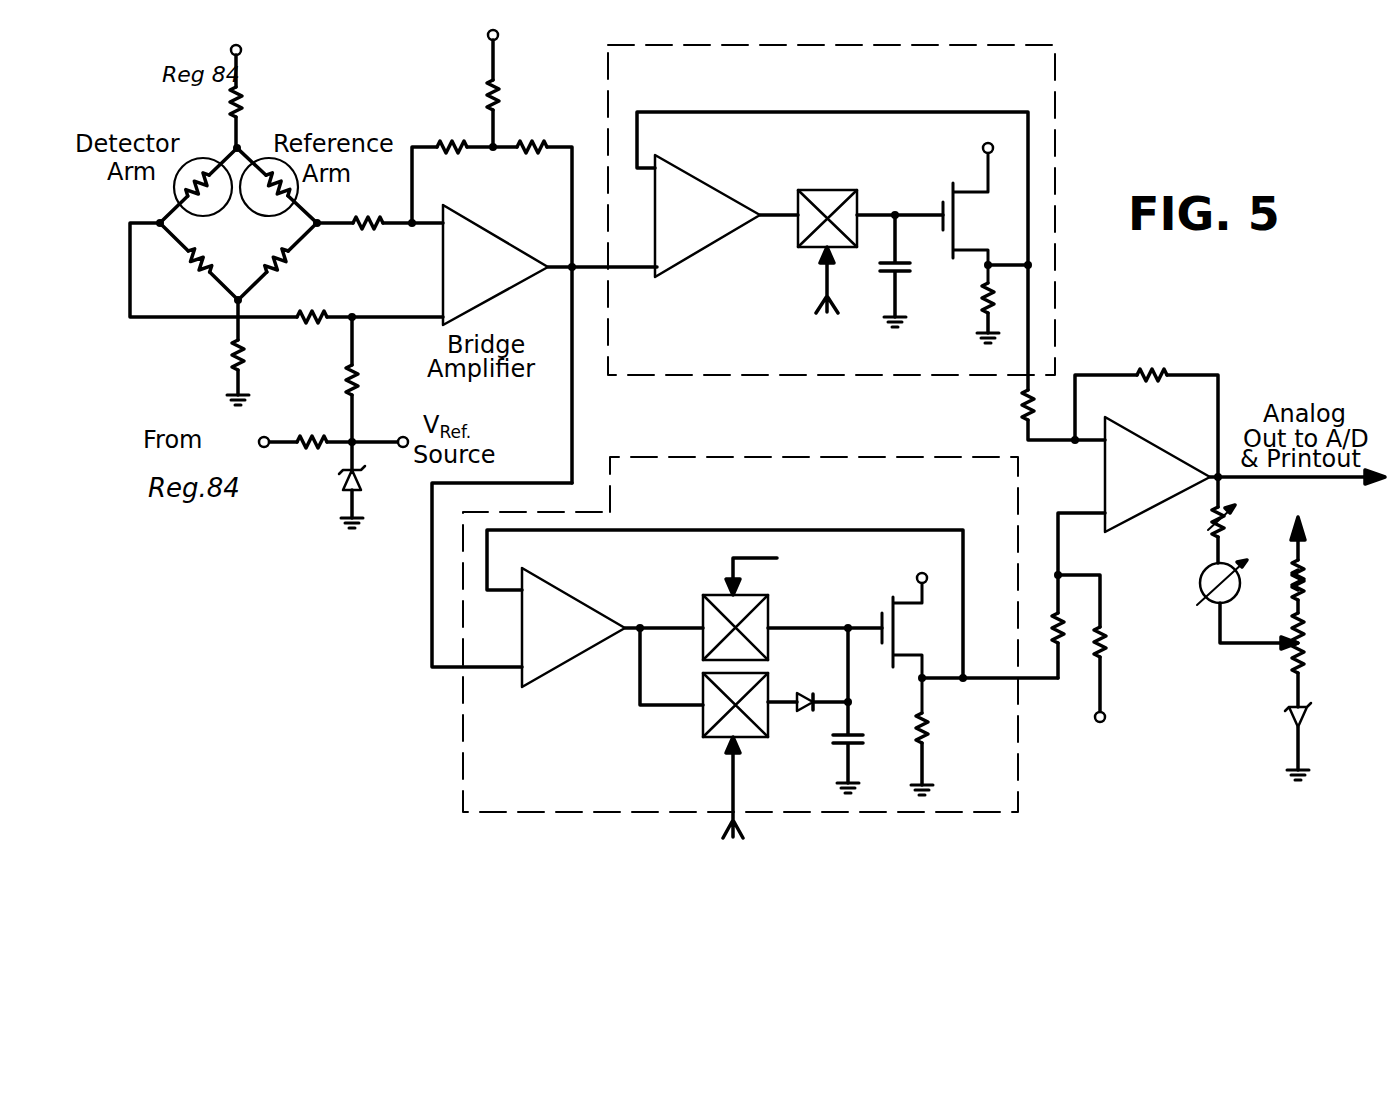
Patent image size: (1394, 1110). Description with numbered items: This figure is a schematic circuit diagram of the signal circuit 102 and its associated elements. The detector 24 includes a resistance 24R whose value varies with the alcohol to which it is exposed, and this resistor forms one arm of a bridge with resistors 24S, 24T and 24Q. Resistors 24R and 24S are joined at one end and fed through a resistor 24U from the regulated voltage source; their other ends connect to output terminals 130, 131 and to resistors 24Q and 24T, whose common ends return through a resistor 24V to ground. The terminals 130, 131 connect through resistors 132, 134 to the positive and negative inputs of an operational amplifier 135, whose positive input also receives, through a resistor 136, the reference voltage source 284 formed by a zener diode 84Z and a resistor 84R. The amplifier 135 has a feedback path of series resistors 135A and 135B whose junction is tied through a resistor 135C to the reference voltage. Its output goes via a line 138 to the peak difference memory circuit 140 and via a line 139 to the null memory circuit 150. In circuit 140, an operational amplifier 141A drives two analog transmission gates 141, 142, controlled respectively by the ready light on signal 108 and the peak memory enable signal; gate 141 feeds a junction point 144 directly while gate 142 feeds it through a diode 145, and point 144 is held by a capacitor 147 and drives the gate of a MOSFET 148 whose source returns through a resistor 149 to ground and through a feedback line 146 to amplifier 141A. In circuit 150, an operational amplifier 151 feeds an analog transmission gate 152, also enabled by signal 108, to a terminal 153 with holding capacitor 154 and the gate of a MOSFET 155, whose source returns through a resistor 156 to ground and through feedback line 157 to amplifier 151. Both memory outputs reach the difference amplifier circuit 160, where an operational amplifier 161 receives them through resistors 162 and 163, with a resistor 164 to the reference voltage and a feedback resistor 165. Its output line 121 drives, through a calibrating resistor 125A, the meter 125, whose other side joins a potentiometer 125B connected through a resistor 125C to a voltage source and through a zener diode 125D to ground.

The detector 24 is at (209, 225).
The resistor 24U is at (242, 97).
The resistance 24R is at (219, 212).
The resistor 24S is at (295, 192).
The resistor 24Q is at (196, 262).
The resistor 24T is at (292, 268).
The resistor 24V is at (262, 352).
The output terminal 130 is at (150, 222).
The output terminal 131 is at (335, 243).
The resistor 132 is at (312, 316).
The resistor 134 is at (370, 228).
The operational amplifier 135 is at (550, 266).
The resistor 135A is at (533, 140).
The resistor 135B is at (452, 140).
The resistor 135C is at (500, 100).
The resistor 136 is at (356, 375).
The resistor 84R is at (316, 439).
The zener diode 84Z is at (362, 478).
The reference voltage source 284 is at (322, 461).
The signal circuit 102 is at (400, 633).
The line 138 is at (575, 377).
The line 139 is at (628, 270).
The null memory circuit 150 is at (831, 210).
The operational amplifier 151 is at (726, 217).
The analog transmission gate 152 is at (826, 188).
The terminal 153 is at (894, 212).
The holding capacitor 154 is at (903, 268).
The MOSFET 155 is at (956, 227).
The resistor 156 is at (982, 312).
The feedback line 157 is at (797, 112).
The ready light on signal 108 is at (824, 286).
The peak difference memory circuit 140 is at (808, 457).
The operational amplifier 141A is at (612, 636).
The analog transmission gate 141 is at (704, 642).
The analog transmission gate 142 is at (702, 697).
The junction point 144 is at (846, 632).
The diode 145 is at (810, 711).
The feedback line 146 is at (763, 530).
The holding capacitor 147 is at (853, 743).
The MOSFET 148 is at (897, 647).
The resistor 149 is at (928, 740).
The difference amplifier circuit 160 is at (1322, 349).
The operational amplifier 161 is at (1245, 474).
The resistor 162 is at (1060, 645).
The resistor 163 is at (1024, 412).
The resistor 164 is at (1104, 640).
The feedback resistor 165 is at (1150, 377).
The line 121 is at (1222, 481).
The meter 125 is at (1236, 598).
The calibrating resistor 125A is at (1214, 530).
The potentiometer 125B is at (1304, 660).
The resistor 125C is at (1304, 585).
The zener diode 125D is at (1306, 718).